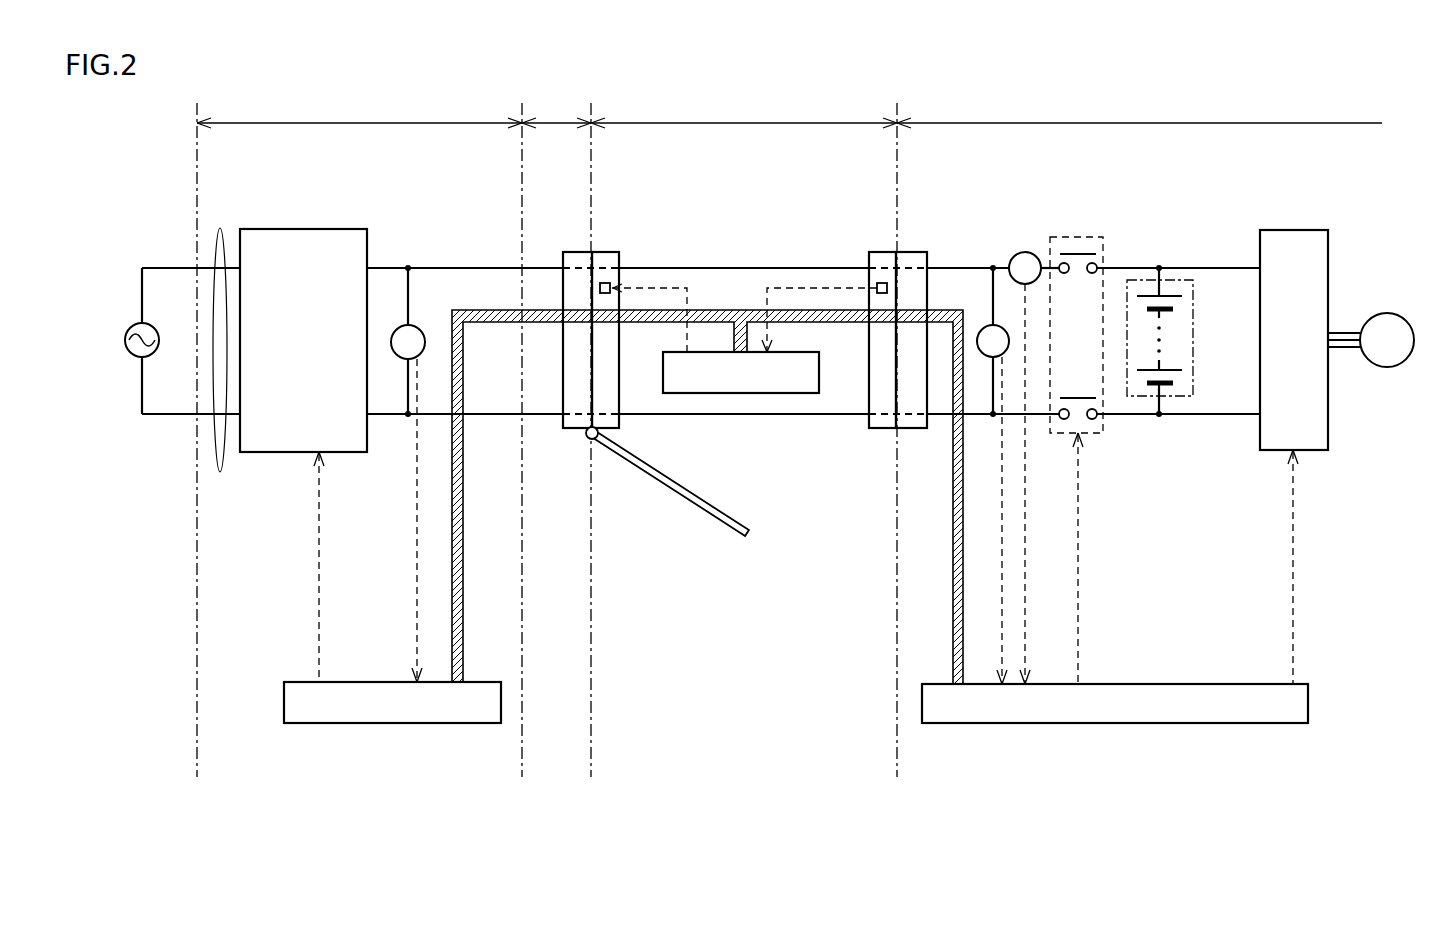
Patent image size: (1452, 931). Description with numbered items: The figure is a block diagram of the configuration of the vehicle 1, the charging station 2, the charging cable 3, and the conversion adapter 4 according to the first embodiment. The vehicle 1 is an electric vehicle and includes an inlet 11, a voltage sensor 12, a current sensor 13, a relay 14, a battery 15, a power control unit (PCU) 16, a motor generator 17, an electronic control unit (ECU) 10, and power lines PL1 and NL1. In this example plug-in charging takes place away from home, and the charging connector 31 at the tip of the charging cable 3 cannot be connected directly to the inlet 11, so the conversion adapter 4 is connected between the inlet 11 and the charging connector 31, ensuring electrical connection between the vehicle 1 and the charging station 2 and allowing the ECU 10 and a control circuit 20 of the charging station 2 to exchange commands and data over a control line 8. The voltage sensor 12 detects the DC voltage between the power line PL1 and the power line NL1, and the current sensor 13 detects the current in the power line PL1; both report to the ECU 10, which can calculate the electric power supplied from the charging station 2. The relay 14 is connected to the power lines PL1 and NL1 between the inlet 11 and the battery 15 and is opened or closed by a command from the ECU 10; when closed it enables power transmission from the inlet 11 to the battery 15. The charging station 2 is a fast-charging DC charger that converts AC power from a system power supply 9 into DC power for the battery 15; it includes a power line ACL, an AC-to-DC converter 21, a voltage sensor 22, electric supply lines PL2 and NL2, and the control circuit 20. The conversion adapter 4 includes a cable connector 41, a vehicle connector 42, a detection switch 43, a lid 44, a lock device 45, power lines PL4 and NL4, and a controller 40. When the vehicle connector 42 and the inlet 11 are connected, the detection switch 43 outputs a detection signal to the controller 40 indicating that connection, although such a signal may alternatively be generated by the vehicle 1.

The vehicle 1 is at (1139, 112).
The charging station 2 is at (359, 112).
The charging cable 3 is at (556, 112).
The conversion adapter 4 is at (744, 112).
The control line 8 is at (478, 313).
The system power supply 9 is at (127, 353).
The electronic control unit (ECU) 10 is at (1213, 683).
The inlet 11 is at (916, 251).
The voltage sensor 12 is at (980, 329).
The current sensor 13 is at (1022, 252).
The relay 14 is at (1088, 238).
The battery 15 is at (1183, 279).
The power control unit (PCU) 16 is at (1308, 230).
The motor generator 17 is at (1405, 317).
The control circuit 20 is at (307, 681).
The AC-to-DC converter 21 is at (330, 229).
The voltage sensor 22 is at (397, 330).
The charging connector 31 is at (572, 251).
The controller 40 is at (788, 352).
The cable connector 41 is at (604, 251).
The vehicle connector 42 is at (884, 251).
The detection switch 43 is at (878, 280).
The lid 44 is at (708, 500).
The lock device 45 is at (608, 283).
The power line PL1 is at (1233, 265).
The power line NL1 is at (1233, 418).
The electric supply line PL2 is at (494, 265).
The electric supply line NL2 is at (494, 418).
The power line PL4 is at (770, 265).
The power line NL4 is at (770, 418).
The power line ACL is at (215, 366).